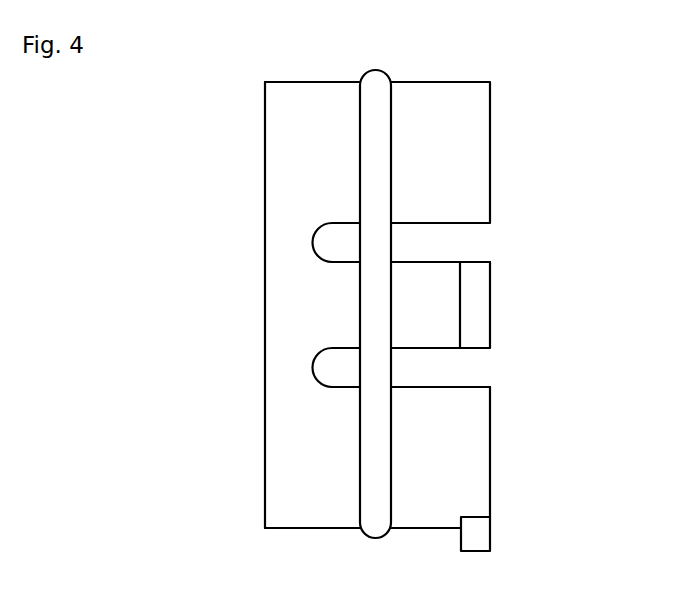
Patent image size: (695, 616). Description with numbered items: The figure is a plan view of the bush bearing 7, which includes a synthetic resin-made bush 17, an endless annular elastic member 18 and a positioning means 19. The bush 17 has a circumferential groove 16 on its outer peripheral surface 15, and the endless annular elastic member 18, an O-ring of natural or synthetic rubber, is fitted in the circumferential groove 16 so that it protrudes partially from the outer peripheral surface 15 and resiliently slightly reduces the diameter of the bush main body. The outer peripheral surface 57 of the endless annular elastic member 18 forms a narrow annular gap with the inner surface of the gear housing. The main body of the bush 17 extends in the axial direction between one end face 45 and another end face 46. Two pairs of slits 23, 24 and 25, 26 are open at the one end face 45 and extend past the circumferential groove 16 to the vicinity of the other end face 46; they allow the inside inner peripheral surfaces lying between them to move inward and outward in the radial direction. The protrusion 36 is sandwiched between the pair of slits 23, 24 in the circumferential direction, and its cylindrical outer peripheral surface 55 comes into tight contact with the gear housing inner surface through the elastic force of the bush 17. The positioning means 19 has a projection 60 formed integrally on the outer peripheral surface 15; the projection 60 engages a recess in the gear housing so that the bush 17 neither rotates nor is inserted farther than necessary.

The bush bearing 7 is at (233, 352).
The outer peripheral surface 15 is at (282, 125).
The circumferential groove 16 is at (363, 492).
The bush 17 is at (502, 141).
The endless annular elastic member 18 is at (383, 103).
The positioning means 19 is at (510, 551).
The slit 23 is at (456, 242).
The slit 25 is at (465, 240).
The slit 24 is at (456, 367).
The slit 26 is at (470, 367).
The protrusion 36 is at (478, 307).
The one end face 45 is at (492, 103).
The other end face 46 is at (265, 240).
The outer peripheral surface 55 is at (480, 277).
The outer peripheral surface 57 is at (372, 417).
The projection 60 is at (474, 540).